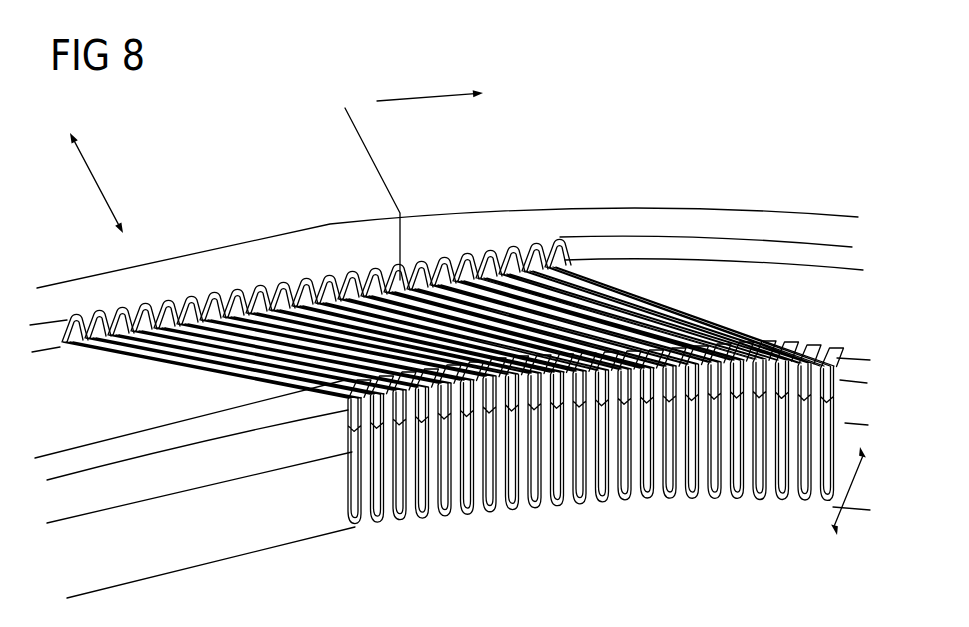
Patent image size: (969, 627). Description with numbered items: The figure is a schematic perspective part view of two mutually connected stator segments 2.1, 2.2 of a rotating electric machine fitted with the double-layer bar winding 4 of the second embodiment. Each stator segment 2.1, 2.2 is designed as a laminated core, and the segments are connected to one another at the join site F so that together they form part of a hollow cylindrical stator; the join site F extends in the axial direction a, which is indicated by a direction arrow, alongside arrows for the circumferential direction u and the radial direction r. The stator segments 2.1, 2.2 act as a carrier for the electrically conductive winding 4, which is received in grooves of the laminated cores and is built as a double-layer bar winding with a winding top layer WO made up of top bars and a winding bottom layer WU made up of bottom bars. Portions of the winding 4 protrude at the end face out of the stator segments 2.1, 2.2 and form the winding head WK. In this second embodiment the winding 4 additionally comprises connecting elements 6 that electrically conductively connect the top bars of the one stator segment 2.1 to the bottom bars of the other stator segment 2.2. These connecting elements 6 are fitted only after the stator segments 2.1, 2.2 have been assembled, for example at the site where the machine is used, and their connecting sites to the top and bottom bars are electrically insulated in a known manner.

The stator segment 2.1 is at (222, 218).
The stator segment 2.2 is at (700, 178).
The winding 4 is at (453, 363).
The connecting element 6 is at (474, 280).
The join site F is at (363, 148).
The winding bottom layer WU is at (567, 247).
The winding top layer WO is at (758, 505).
The winding head WK is at (688, 290).
The axial direction a is at (96, 183).
The circumferential direction u is at (430, 82).
The radial direction r is at (848, 491).